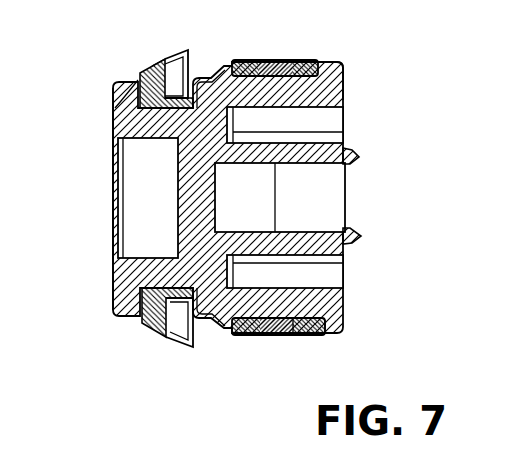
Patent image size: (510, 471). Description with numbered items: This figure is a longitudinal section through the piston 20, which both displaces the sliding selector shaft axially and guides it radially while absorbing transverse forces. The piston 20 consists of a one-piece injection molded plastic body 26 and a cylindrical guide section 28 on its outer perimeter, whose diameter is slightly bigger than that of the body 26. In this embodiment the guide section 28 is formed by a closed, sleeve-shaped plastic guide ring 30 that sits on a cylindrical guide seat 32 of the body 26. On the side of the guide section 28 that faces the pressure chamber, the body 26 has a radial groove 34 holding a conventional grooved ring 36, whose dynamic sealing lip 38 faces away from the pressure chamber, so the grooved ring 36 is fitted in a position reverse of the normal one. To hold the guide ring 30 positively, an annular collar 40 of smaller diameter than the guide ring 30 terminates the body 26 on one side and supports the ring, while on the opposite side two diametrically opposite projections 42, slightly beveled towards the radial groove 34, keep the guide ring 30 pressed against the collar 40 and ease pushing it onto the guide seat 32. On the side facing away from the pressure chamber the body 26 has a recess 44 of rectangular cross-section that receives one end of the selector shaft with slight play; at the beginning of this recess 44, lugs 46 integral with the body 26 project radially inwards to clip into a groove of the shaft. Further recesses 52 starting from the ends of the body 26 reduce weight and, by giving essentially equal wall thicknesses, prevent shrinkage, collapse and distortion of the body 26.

The piston 20 is at (355, 73).
The body 26 is at (217, 78).
The guide section 28 is at (256, 61).
The guide ring 30 is at (266, 337).
The guide seat 32 is at (288, 337).
The radial groove 34 is at (115, 108).
The grooved ring 36 is at (140, 73).
The dynamic sealing lip 38 is at (166, 59).
The annular collar 40 is at (333, 75).
The projections 42 is at (178, 140).
The recess 44 is at (324, 212).
The lugs 46 is at (355, 226).
The recesses 52 is at (166, 209).